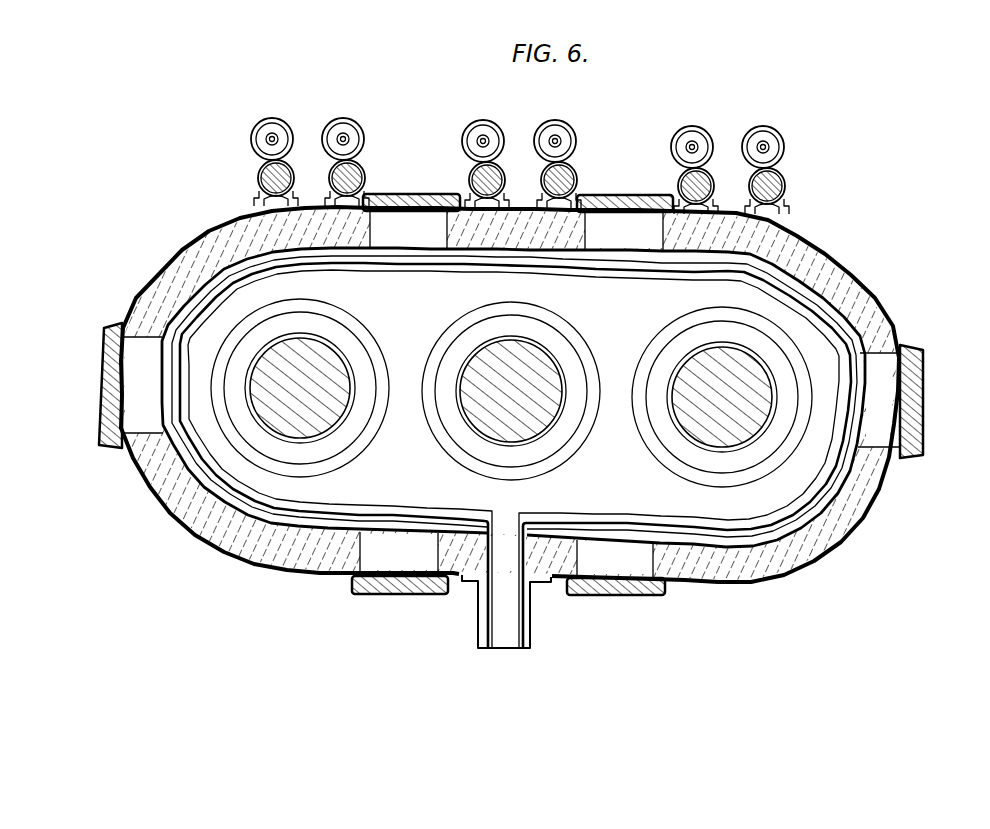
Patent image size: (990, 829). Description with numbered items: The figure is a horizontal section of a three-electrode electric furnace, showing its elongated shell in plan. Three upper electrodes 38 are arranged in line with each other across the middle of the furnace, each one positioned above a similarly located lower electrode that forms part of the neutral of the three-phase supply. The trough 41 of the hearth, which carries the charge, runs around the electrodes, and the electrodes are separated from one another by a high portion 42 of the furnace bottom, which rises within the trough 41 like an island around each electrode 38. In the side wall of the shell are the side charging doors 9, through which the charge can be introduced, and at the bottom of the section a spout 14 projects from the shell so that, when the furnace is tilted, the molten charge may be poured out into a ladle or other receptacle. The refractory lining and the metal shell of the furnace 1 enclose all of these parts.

The casing shell 1 is at (197, 246).
The side charging door 9 is at (893, 376).
The spout 14 is at (510, 621).
The upper electrode 38 is at (337, 357).
The trough 41 is at (514, 452).
The high portion of the furnace bottom 42 is at (357, 429).